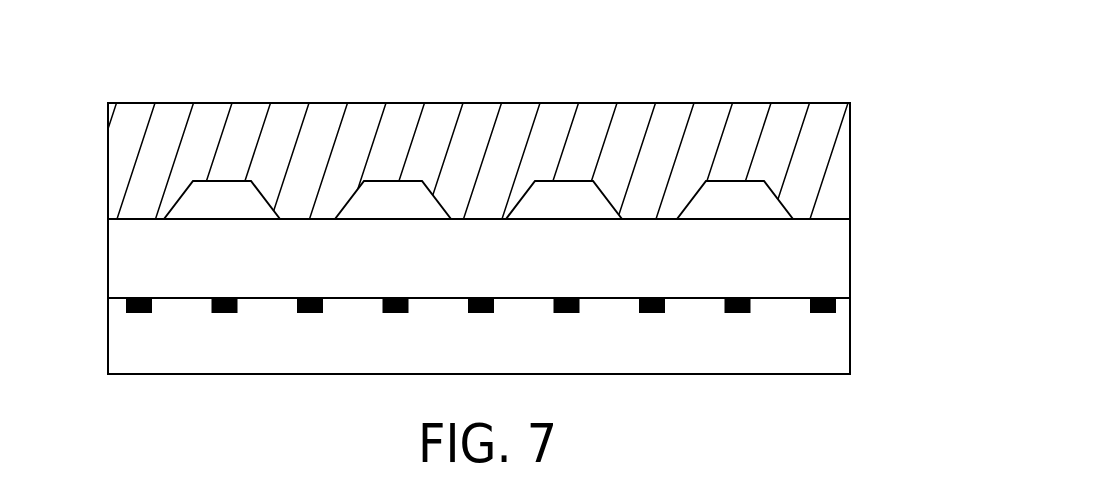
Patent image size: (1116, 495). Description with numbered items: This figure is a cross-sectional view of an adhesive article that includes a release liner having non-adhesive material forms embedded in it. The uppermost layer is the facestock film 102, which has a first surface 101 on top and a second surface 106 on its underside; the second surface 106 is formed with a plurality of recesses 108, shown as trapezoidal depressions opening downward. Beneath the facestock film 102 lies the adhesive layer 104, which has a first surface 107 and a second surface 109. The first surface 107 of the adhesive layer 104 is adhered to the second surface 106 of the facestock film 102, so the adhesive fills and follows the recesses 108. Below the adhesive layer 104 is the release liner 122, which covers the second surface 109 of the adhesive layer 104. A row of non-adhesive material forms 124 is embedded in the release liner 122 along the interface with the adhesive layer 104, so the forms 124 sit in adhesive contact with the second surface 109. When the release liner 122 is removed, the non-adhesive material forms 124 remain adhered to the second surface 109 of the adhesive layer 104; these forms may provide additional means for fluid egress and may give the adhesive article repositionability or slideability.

The first surface 101 is at (633, 102).
The facestock film 102 is at (817, 143).
The adhesive layer 104 is at (827, 247).
The second surface 106 is at (135, 220).
The first surface 107 is at (832, 214).
The recesses 108 is at (210, 207).
The second surface 109 is at (117, 300).
The release liner 122 is at (830, 338).
The non-adhesive material forms 124 is at (733, 313).